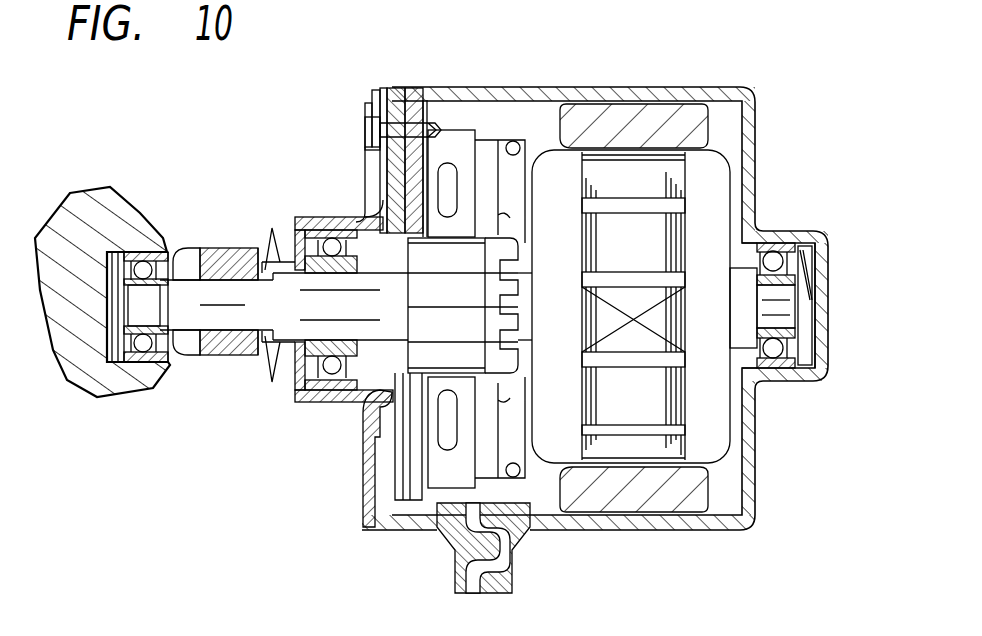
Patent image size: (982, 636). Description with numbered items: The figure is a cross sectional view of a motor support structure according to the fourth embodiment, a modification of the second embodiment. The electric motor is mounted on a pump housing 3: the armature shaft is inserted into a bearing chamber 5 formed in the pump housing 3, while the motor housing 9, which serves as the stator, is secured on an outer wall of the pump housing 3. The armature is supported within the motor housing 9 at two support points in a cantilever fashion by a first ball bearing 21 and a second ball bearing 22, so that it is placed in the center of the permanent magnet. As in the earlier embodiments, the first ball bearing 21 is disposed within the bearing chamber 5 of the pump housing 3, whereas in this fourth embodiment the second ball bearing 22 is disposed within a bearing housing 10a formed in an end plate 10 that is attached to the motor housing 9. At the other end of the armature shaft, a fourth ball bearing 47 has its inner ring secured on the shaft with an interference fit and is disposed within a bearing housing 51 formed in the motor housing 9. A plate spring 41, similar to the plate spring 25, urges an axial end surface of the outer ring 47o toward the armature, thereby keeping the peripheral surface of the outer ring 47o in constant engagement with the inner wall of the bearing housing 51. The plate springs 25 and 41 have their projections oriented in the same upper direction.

The pump housing 3 is at (108, 200).
The plate spring 25 is at (118, 262).
The bearing chamber 5 is at (118, 360).
The first ball bearing 21 is at (150, 374).
The second ball bearing 22 is at (334, 402).
The end plate 10 is at (387, 162).
The bearing housing 10a is at (316, 219).
The motor housing 9 is at (516, 93).
The outer ring 47o is at (767, 233).
The fourth ball bearing 47 is at (788, 393).
The bearing housing 51 is at (817, 230).
The plate spring 41 is at (816, 332).